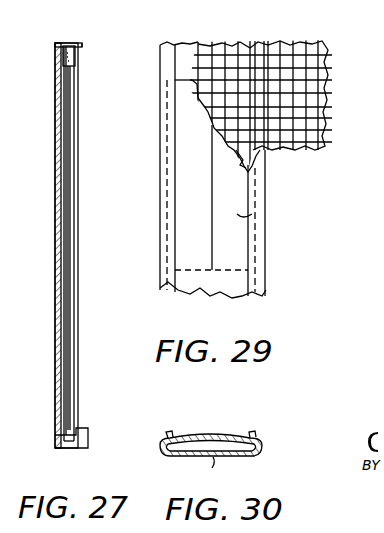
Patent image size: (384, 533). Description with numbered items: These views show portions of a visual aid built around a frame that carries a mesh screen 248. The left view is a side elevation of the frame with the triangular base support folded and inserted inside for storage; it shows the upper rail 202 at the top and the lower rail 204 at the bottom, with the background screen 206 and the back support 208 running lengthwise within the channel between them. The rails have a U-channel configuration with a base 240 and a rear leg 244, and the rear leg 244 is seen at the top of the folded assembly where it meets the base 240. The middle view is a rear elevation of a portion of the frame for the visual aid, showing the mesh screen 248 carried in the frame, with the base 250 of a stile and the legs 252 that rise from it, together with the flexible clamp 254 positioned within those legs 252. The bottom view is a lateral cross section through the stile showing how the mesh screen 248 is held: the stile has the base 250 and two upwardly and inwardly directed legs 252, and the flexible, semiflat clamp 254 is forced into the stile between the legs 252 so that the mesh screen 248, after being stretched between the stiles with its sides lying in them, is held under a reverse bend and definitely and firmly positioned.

In FIG. 27, the upper rail 202 is at (74, 56).
In FIG. 27, the lower rail 204 is at (80, 432).
In FIG. 27, the background screen 206 is at (68, 306).
In FIG. 27, the back support 208 is at (75, 258).
In FIG. 27, the base 240 is at (81, 43).
In FIG. 27, the rear leg 244 is at (83, 49).
In FIG. 29, the mesh screen 248 is at (320, 122).
In FIG. 29, the base 250 is at (231, 291).
In FIG. 30, the base 250 is at (232, 471).
In FIG. 29, the legs 252 is at (172, 232).
In FIG. 30, the legs 252 is at (170, 435).
In FIG. 29, the flexible clamp 254 is at (236, 248).
In FIG. 30, the flexible clamp 254 is at (211, 425).